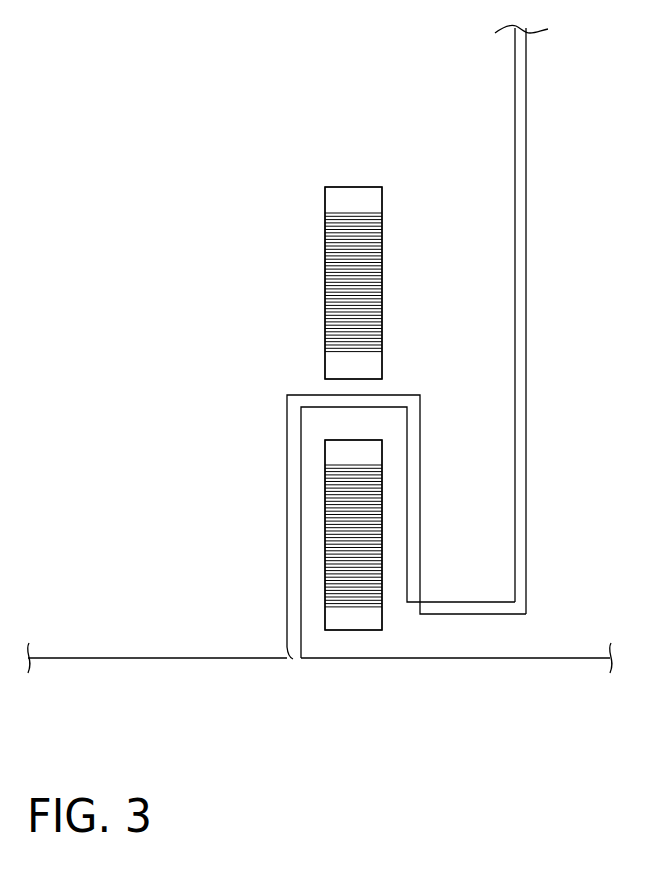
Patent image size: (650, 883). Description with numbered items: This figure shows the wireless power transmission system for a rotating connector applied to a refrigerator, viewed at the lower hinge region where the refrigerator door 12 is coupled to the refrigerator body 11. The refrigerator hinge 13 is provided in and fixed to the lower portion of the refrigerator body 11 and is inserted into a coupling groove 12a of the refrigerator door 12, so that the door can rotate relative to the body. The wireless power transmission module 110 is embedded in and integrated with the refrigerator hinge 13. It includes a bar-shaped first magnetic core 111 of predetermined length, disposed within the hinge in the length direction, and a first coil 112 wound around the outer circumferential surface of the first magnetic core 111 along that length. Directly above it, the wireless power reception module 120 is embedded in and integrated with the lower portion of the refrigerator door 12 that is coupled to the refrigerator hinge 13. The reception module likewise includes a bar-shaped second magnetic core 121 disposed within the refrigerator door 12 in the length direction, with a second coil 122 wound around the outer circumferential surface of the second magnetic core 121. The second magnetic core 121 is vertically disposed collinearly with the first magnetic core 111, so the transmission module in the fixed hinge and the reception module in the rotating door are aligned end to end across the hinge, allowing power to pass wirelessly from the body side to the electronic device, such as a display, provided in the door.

The refrigerator body 11 is at (560, 648).
The refrigerator door 12 is at (153, 650).
The coupling groove 12a is at (292, 652).
The refrigerator hinge 13 is at (312, 658).
The wireless power transmission module 110 is at (354, 637).
The first magnetic core 111 is at (372, 454).
The first coil 112 is at (375, 522).
The wireless power reception module 120 is at (357, 180).
The second magnetic core 121 is at (330, 363).
The second coil 122 is at (330, 293).